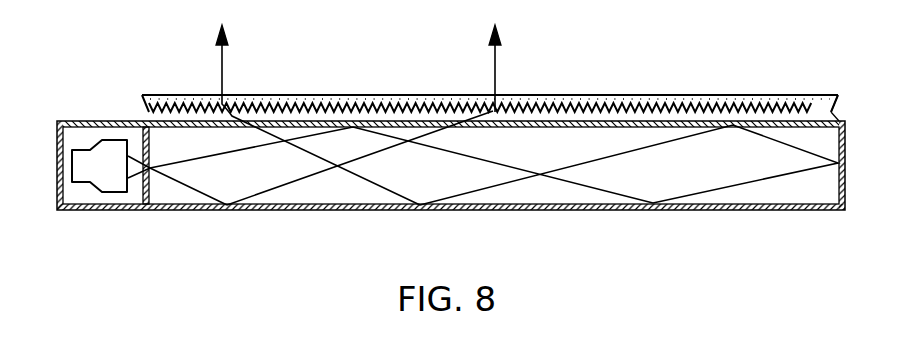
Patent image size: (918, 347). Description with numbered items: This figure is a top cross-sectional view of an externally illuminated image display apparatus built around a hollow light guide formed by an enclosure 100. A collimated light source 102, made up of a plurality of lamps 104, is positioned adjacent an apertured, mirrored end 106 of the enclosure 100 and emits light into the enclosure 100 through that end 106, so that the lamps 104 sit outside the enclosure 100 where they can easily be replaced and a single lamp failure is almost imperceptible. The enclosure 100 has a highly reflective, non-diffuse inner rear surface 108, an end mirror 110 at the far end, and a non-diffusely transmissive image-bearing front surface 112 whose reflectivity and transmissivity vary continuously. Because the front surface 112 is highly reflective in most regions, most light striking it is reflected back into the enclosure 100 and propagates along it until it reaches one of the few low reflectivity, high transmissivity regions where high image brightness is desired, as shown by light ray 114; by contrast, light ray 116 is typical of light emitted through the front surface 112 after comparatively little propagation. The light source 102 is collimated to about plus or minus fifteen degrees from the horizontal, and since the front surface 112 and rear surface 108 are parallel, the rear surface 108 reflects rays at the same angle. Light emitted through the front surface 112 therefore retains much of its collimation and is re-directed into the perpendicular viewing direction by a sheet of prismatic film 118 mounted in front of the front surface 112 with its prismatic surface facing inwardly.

The enclosure 100 is at (358, 223).
The collimated light source 102 is at (93, 121).
The lamps 104 is at (113, 176).
The apertured, mirrored end 106 is at (144, 141).
The inner rear surface 108 is at (571, 199).
The end mirror 110 is at (838, 180).
The image-bearing front surface 112 is at (839, 118).
The light ray 114 is at (224, 60).
The light ray 116 is at (497, 60).
The prismatic film 118 is at (368, 95).